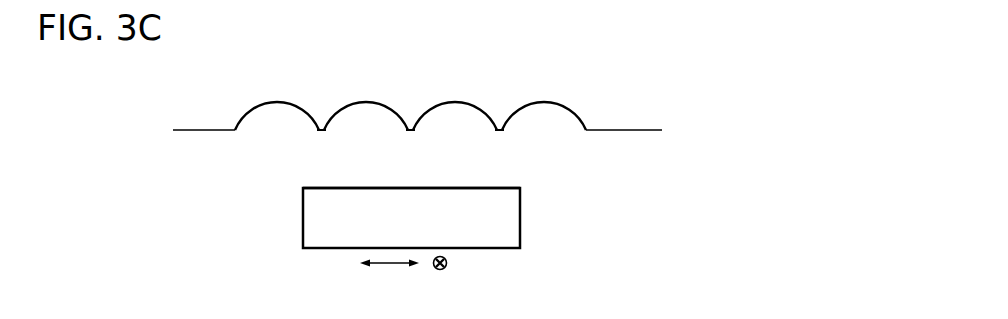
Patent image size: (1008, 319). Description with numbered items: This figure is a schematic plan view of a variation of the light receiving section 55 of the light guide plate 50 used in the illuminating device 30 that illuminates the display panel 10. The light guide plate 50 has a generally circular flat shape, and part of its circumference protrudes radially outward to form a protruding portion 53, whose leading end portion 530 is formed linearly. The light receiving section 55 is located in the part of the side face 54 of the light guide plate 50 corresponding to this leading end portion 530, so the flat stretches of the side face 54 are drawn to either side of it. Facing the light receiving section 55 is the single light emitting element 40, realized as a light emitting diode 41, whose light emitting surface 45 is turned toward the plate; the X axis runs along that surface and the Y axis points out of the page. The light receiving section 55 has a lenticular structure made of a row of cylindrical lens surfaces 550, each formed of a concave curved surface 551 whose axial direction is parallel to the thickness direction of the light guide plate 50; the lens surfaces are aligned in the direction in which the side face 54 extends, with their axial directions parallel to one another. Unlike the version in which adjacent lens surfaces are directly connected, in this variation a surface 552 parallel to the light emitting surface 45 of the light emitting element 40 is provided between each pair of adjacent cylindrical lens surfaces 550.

The display panel 10 is at (390, 154).
The illuminating device 30 is at (153, 83).
The light guide plate 50 is at (190, 130).
The light receiving section 55 is at (536, 72).
The concave curved surface 551 is at (410, 79).
The cylindrical lens surface 550 is at (529, 108).
The surface parallel to the light emitting surface 552 is at (499, 130).
The light emitting surface 45 is at (495, 188).
The light emitting element 40 is at (460, 198).
The light emitting diode 41 is at (460, 198).
The side face 54 is at (631, 161).
The protruding portion 53 is at (631, 161).
The leading end portion 530 is at (617, 130).